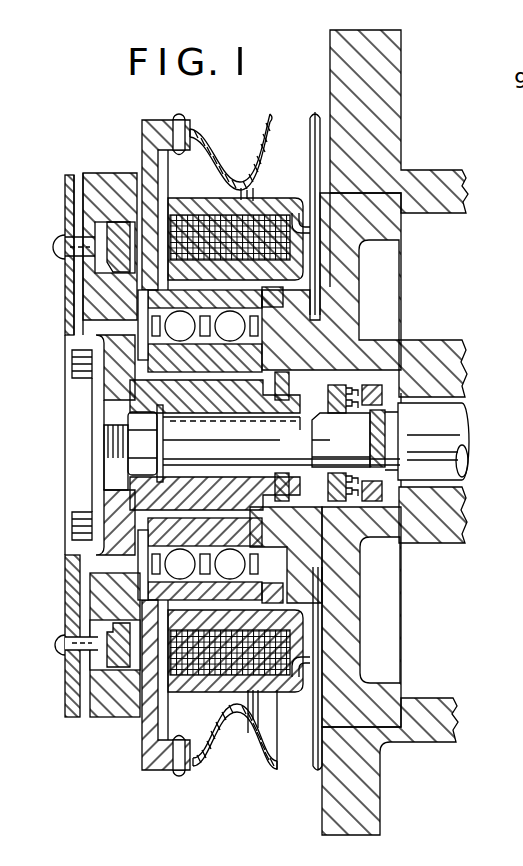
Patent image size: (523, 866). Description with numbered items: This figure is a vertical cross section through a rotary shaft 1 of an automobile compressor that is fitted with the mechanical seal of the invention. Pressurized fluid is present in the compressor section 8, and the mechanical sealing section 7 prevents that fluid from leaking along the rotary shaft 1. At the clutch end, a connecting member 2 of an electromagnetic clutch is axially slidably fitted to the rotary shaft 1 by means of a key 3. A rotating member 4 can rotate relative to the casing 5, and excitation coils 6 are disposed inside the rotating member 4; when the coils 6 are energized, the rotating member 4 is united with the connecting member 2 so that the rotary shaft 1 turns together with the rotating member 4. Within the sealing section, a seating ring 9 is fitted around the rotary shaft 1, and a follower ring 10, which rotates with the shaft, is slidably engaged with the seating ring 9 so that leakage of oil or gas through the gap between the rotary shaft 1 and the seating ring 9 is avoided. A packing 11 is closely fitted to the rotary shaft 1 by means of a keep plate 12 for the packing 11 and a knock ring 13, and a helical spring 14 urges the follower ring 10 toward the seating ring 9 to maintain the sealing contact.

The rotary shaft 1 is at (459, 418).
The connecting member 2 is at (97, 385).
The key 3 is at (237, 414).
The rotating member 4 is at (142, 148).
The casing 5 is at (350, 258).
The excitation coils 6 is at (188, 205).
The mechanical sealing section 7 is at (384, 356).
The compressor section 8 is at (449, 489).
The seating ring 9 is at (300, 412).
The follower ring 10 is at (347, 455).
The packing 11 is at (342, 453).
The keep plate 12 is at (338, 387).
The knock ring 13 is at (457, 462).
The helical spring 14 is at (357, 395).